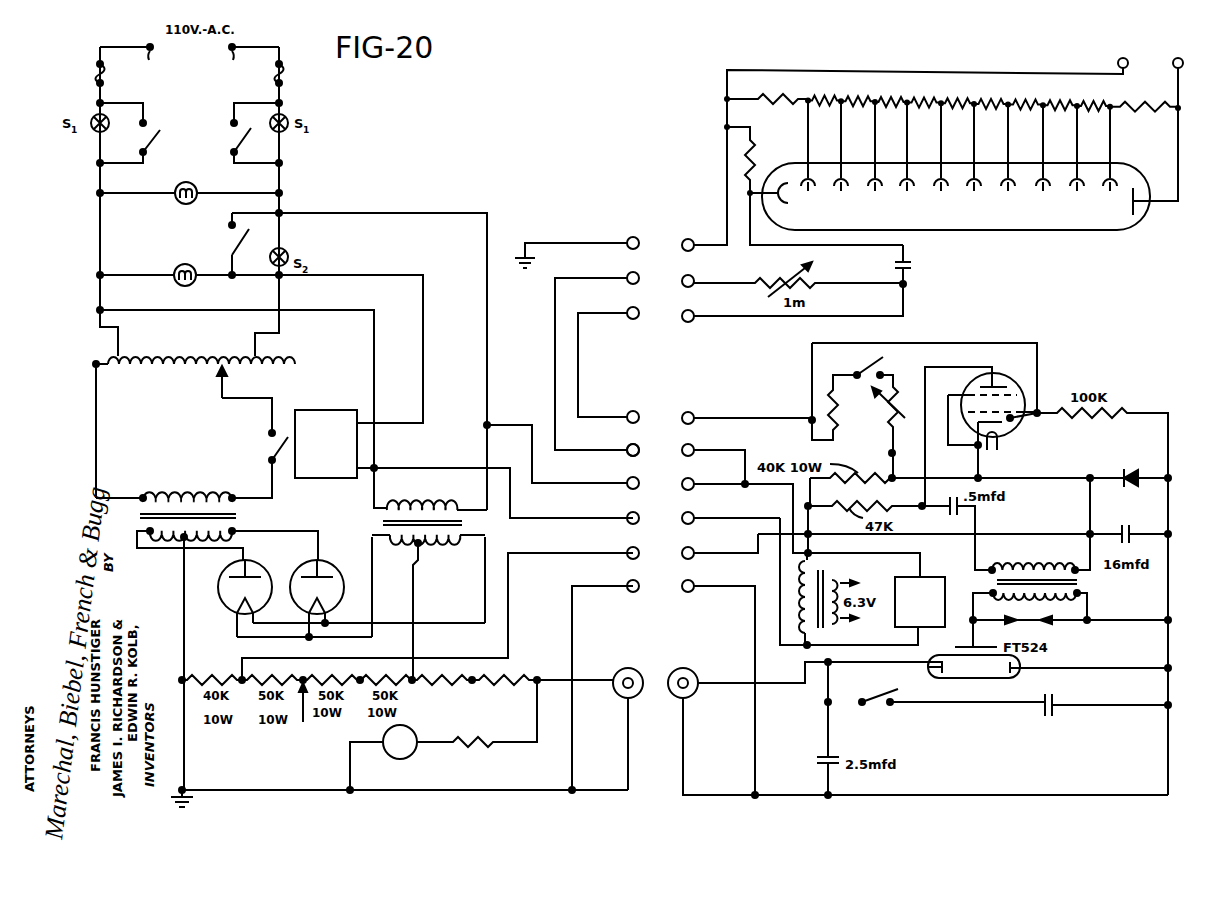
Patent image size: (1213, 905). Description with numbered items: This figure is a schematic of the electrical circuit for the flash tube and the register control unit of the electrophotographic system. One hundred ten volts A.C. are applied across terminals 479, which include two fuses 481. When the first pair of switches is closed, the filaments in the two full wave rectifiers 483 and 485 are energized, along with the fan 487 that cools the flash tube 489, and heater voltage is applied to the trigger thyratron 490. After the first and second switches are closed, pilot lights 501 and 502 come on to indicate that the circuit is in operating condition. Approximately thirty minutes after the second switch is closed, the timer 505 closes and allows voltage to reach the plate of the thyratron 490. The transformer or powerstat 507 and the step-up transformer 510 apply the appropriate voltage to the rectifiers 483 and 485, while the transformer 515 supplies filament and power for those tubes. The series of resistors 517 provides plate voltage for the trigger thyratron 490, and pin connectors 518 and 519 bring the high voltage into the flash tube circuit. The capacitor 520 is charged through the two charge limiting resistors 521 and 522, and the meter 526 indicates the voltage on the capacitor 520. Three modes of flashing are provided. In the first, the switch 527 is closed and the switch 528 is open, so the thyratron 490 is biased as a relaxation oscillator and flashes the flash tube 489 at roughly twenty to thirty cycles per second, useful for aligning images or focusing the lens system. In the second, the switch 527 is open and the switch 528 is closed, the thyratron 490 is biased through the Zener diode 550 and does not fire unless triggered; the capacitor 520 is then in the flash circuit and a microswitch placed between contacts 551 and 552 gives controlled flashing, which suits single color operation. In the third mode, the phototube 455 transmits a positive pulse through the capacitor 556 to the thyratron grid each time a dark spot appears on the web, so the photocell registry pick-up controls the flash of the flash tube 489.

The terminals 479 is at (185, 64).
The fuses 481 is at (97, 74).
The pilot light 501 is at (186, 182).
The pilot light 502 is at (177, 265).
The transformer or powerstat 507 is at (282, 354).
The timer 505 is at (324, 410).
The step-up transformer 510 is at (168, 494).
The transformer 515 is at (371, 518).
The full wave rectifier 485 is at (224, 602).
The full wave rectifier 483 is at (344, 584).
The charge limiting resistor 521 is at (452, 674).
The charge limiting resistor 522 is at (516, 676).
The series of resistors 517 is at (301, 715).
The meter 526 is at (410, 752).
The pin connector 518 is at (628, 670).
The pin connector 519 is at (682, 670).
The contact 551 is at (636, 319).
The contact 552 is at (637, 455).
The capacitor 556 is at (894, 266).
The phototube 455 is at (1128, 224).
The switch 527 is at (871, 361).
The trigger thyratron 490 is at (1002, 372).
The Zener diode 550 is at (1130, 488).
The fan 487 is at (934, 577).
The flash tube 489 is at (965, 676).
The capacitor 520 is at (1048, 693).
The switch 528 is at (875, 699).